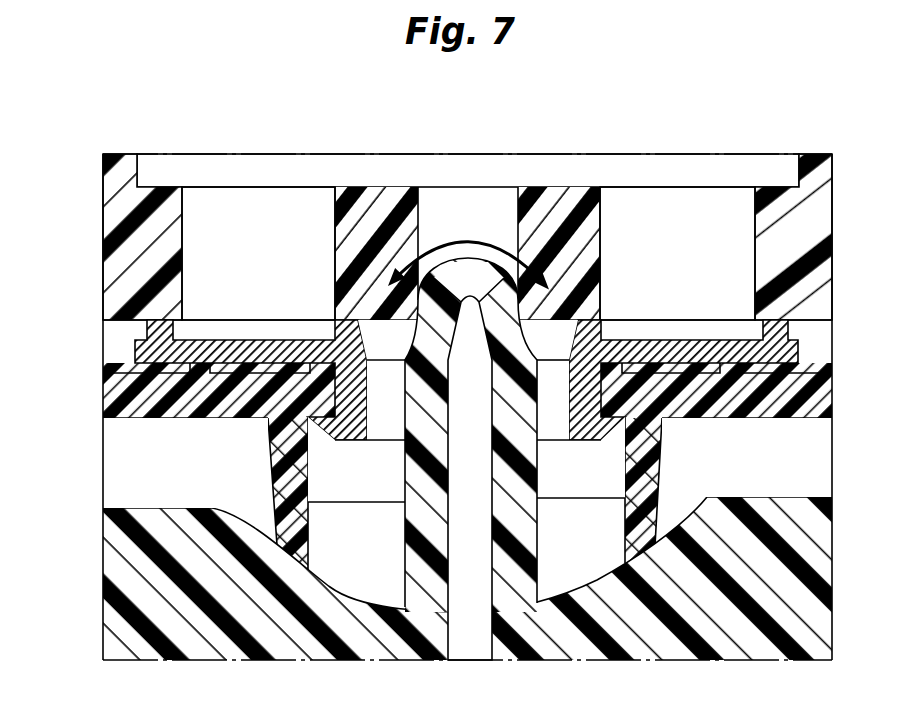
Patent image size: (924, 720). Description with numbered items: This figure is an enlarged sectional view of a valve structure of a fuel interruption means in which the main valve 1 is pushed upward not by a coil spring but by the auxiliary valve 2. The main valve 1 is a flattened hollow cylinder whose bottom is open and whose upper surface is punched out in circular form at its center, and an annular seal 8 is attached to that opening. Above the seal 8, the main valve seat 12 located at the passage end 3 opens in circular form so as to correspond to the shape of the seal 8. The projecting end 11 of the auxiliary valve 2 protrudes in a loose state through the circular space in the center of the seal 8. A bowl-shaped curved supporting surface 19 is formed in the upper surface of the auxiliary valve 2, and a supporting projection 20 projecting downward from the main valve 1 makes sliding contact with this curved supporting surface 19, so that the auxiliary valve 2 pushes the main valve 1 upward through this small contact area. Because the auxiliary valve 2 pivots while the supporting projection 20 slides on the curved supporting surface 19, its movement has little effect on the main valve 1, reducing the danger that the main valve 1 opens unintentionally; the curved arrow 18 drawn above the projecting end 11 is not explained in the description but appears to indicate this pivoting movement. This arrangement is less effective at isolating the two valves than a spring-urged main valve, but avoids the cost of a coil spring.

The main valve 1 is at (818, 397).
The auxiliary valve 2 is at (655, 618).
The passage end 3 is at (537, 170).
The annular seal 8 is at (798, 353).
The projecting end 11 is at (423, 343).
The main valve seat 12 is at (240, 318).
The gate flow openings 18 is at (533, 355).
The curved supporting surface 19 is at (363, 593).
The supporting projection 20 is at (652, 452).